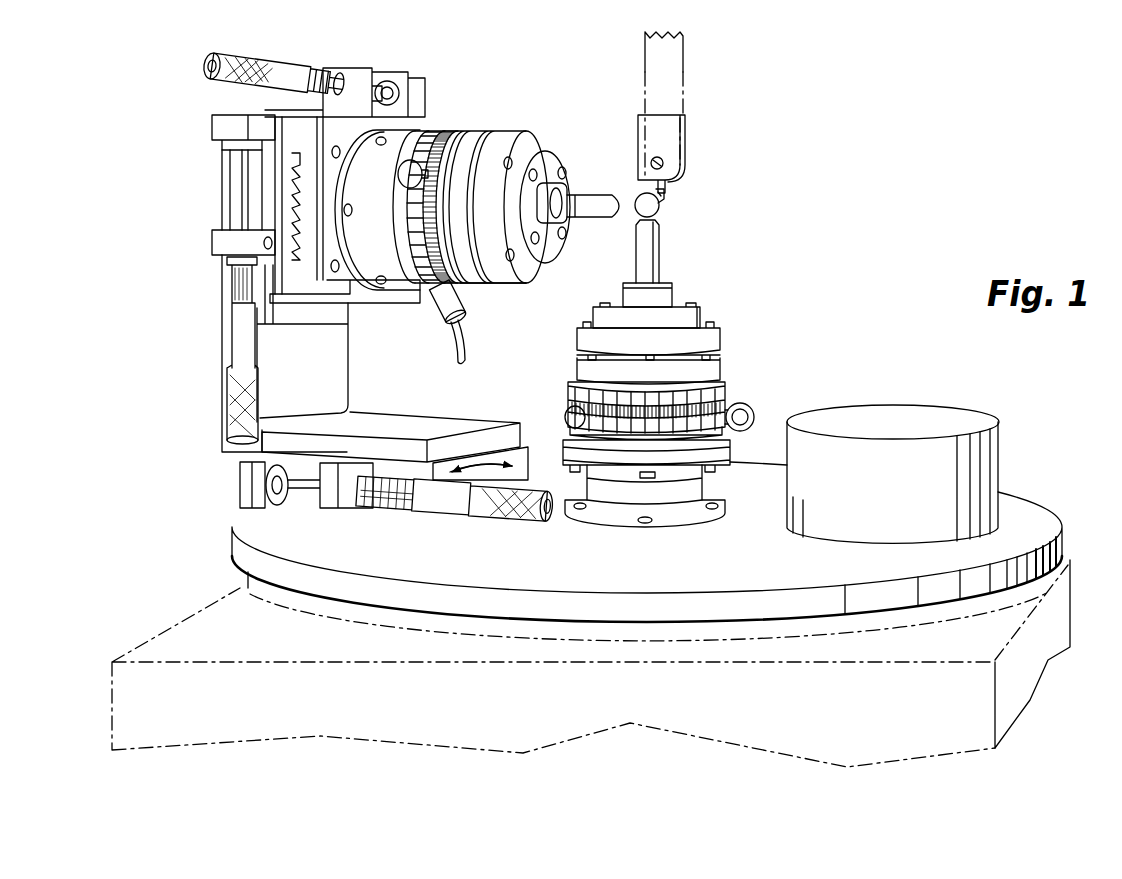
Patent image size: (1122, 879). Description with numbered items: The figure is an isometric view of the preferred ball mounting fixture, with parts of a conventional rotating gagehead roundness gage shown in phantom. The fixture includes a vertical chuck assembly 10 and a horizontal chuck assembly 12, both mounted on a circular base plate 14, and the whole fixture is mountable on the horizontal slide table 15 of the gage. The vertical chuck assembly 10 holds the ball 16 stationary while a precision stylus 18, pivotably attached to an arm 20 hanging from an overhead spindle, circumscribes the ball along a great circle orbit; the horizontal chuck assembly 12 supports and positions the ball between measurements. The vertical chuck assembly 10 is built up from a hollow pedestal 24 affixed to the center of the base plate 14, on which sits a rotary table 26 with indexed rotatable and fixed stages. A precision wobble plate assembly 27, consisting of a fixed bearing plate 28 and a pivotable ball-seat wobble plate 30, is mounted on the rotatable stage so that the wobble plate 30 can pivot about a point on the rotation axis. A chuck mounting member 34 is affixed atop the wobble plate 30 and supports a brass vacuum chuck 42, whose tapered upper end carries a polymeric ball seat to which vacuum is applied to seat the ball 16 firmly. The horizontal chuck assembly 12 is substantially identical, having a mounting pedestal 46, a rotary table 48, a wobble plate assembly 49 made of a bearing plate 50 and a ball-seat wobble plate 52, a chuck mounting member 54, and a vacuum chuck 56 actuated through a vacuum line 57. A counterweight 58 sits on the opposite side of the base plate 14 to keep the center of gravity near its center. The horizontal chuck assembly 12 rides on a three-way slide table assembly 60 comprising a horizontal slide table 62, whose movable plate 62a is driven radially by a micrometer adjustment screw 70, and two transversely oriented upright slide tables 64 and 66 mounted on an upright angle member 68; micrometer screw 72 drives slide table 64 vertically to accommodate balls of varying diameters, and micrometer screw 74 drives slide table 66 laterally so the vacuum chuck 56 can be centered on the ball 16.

The vertical chuck assembly 10 is at (669, 355).
The horizontal chuck assembly 12 is at (442, 198).
The circular base plate 14 is at (238, 538).
The horizontal slide table 15 is at (1023, 672).
The ball 16 is at (658, 217).
The precision stylus 18 is at (663, 203).
The arm 20 is at (672, 60).
The hollow pedestal 24 is at (690, 488).
The rotary table 26 is at (730, 392).
The precision wobble plate assembly 27 is at (570, 357).
The fixed bearing plate 28 is at (708, 373).
The ball-seat wobble plate 30 is at (705, 340).
The chuck mounting member 34 is at (687, 315).
The brass vacuum chuck 42 is at (653, 252).
The mounting pedestal 46 is at (408, 128).
The rotary table 48 is at (455, 130).
The wobble plate assembly 49 is at (497, 288).
The bearing plate 50 is at (473, 143).
The ball-seat wobble plate 52 is at (532, 138).
The chuck mounting member 54 is at (547, 165).
The vacuum chuck 56 is at (597, 215).
The vacuum line 57 is at (463, 344).
The counterweight 58 is at (985, 468).
The three-way slide table assembly 60 is at (211, 430).
The horizontal slide table 62 is at (532, 450).
The movable plate 62a is at (497, 460).
The upright slide table 64 is at (262, 175).
The upright slide table 66 is at (369, 306).
The upright angle member 68 is at (335, 360).
The micrometer adjustment screw 70 is at (465, 516).
The micrometer adjustment screw 72 is at (228, 390).
The micrometer adjustment screw 74 is at (278, 61).